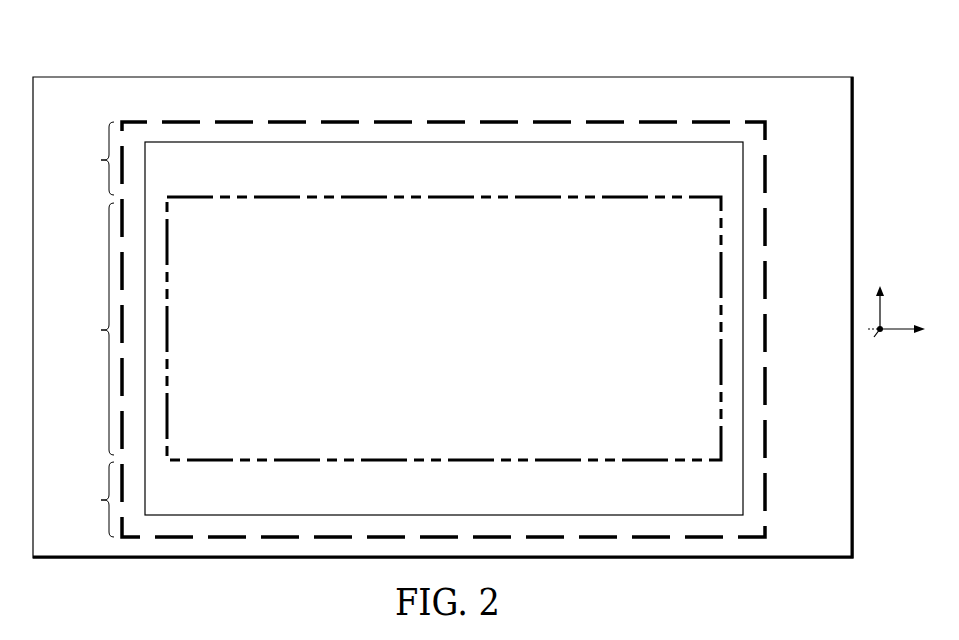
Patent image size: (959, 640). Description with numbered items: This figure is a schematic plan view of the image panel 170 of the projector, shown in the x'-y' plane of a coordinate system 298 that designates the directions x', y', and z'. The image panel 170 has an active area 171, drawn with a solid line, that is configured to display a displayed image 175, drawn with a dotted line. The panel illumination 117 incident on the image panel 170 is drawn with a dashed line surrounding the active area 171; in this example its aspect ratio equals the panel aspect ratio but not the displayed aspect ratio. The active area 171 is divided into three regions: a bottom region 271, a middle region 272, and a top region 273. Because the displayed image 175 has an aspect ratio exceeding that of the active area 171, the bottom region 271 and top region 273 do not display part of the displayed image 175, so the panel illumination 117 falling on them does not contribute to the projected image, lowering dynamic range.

The image panel 170 is at (443, 77).
The panel illumination 117 is at (600, 110).
The active area 171 is at (631, 183).
The displayed image 175 is at (468, 360).
The bottom region 271 is at (85, 499).
The middle region 272 is at (85, 329).
The top region 273 is at (85, 158).
The coordinate system 298 is at (897, 331).